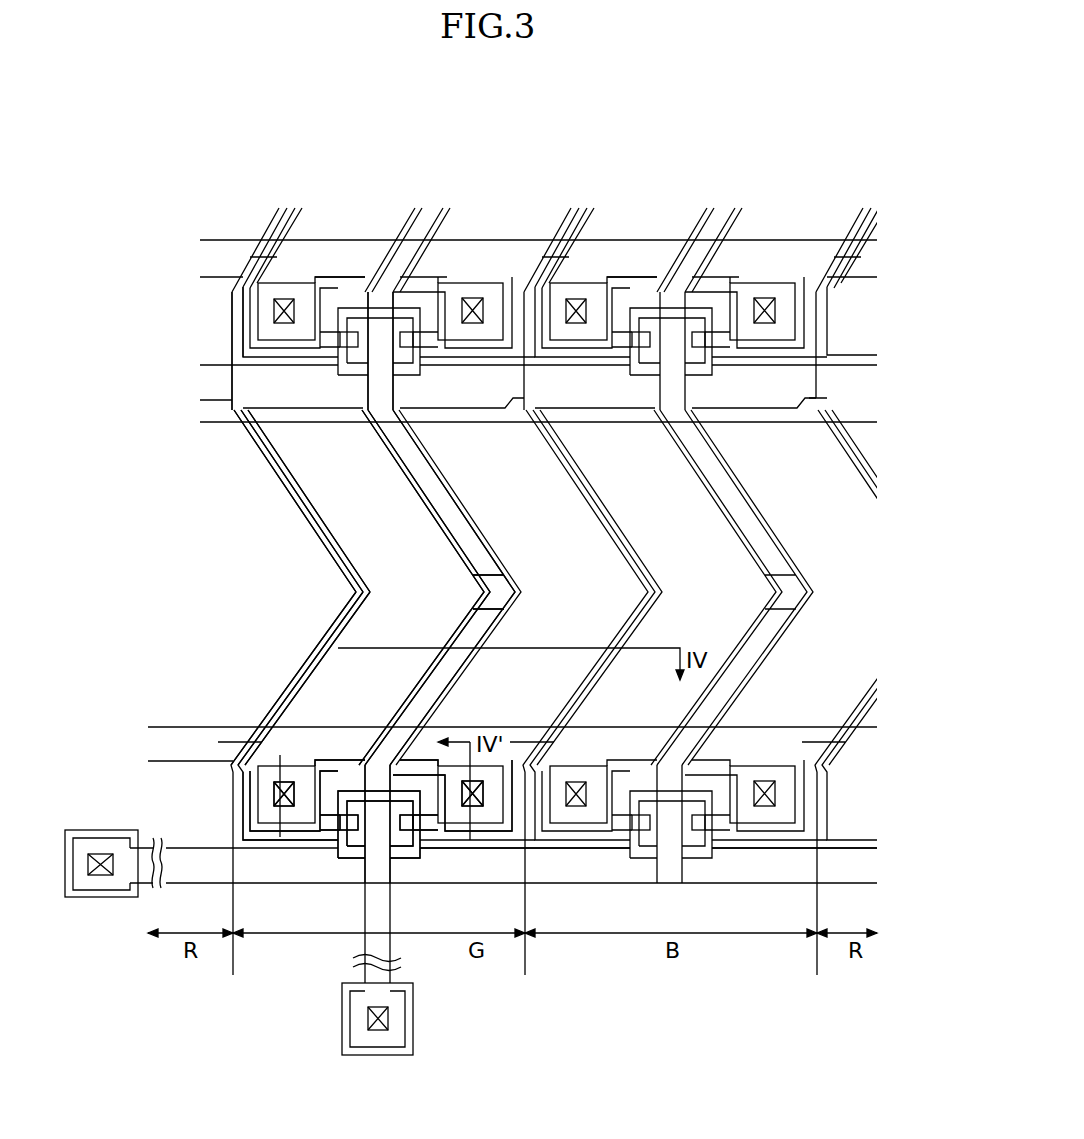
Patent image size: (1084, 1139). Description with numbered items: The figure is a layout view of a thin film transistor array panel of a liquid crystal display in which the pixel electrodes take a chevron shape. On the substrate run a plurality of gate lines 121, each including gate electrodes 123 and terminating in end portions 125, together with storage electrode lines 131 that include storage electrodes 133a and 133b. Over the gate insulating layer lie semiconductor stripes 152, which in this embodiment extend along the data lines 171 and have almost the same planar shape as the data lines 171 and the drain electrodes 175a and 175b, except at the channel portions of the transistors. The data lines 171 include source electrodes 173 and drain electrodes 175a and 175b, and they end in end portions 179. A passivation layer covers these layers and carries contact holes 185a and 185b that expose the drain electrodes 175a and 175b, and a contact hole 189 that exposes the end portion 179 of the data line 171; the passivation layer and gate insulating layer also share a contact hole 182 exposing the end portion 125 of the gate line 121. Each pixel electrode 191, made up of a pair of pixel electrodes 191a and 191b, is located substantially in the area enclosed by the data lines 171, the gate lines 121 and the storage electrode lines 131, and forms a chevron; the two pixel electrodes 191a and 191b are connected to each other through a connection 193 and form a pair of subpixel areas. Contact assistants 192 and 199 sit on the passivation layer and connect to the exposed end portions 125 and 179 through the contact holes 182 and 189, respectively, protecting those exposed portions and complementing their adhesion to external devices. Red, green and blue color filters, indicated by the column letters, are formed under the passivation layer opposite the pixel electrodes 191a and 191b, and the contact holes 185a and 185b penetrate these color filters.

The gate line 121 is at (737, 866).
The gate electrode 123 is at (363, 900).
The end portion of gate line 125 is at (114, 898).
The storage electrode line 131 is at (197, 740).
The storage electrode 133a is at (246, 840).
The storage electrode 133b is at (512, 802).
The semiconductor stripe 152 is at (339, 836).
The data line 171 is at (445, 679).
The source electrode 173 is at (416, 860).
The drain electrode 175a is at (291, 833).
The drain electrode 175b is at (473, 850).
The end portion of data line 179 is at (345, 1032).
The contact hole 182 is at (101, 880).
The contact hole 185a is at (270, 797).
The contact hole 185b is at (487, 798).
The contact hole 189 is at (379, 1031).
The pixel electrode 191 is at (286, 526).
The pixel electrode 191a is at (350, 590).
The pixel electrode 191b is at (348, 548).
The contact assistant 192 is at (100, 829).
The connection 193 is at (497, 598).
The contact assistant 199 is at (407, 1057).